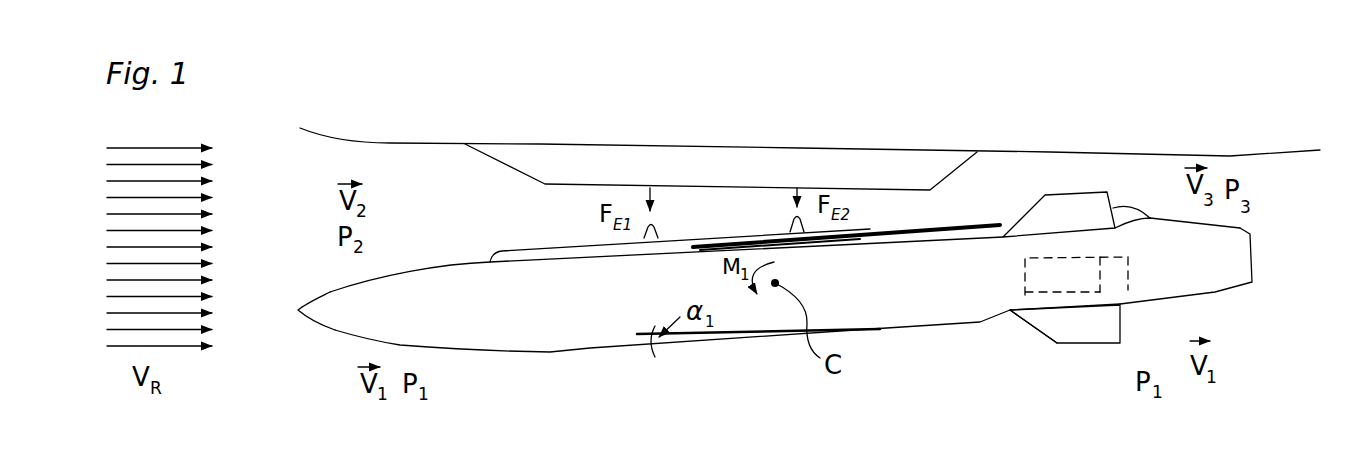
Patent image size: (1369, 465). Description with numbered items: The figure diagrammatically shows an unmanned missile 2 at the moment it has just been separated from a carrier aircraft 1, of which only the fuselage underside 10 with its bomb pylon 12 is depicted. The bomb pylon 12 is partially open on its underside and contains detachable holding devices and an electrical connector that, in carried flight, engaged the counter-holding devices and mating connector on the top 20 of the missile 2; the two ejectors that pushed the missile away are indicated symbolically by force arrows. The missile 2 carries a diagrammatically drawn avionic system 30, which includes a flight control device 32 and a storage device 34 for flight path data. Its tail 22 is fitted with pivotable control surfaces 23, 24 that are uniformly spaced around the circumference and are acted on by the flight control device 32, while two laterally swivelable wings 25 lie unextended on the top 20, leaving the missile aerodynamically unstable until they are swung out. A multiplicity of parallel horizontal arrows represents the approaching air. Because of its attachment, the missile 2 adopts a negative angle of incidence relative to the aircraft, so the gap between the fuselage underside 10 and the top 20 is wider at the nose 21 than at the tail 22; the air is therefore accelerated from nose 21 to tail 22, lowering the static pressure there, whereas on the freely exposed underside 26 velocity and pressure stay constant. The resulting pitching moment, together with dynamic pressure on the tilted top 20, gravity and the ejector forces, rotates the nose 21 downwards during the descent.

The carrier aircraft 1 is at (821, 170).
The unmanned missile 2 is at (807, 307).
The fuselage underside 10 is at (1281, 167).
The bomb pylon 12 is at (542, 162).
The missile top 20 is at (485, 252).
The missile nose 21 is at (344, 344).
The missile tail 22 is at (1218, 298).
The missile control surface 23 is at (1097, 209).
The missile control surface 24 is at (1080, 330).
The missile wings 25 is at (925, 227).
The missile underside 26 is at (629, 350).
The avionic system 30 is at (1019, 287).
The flight control device 32 is at (1060, 297).
The storage device 34 is at (1110, 278).